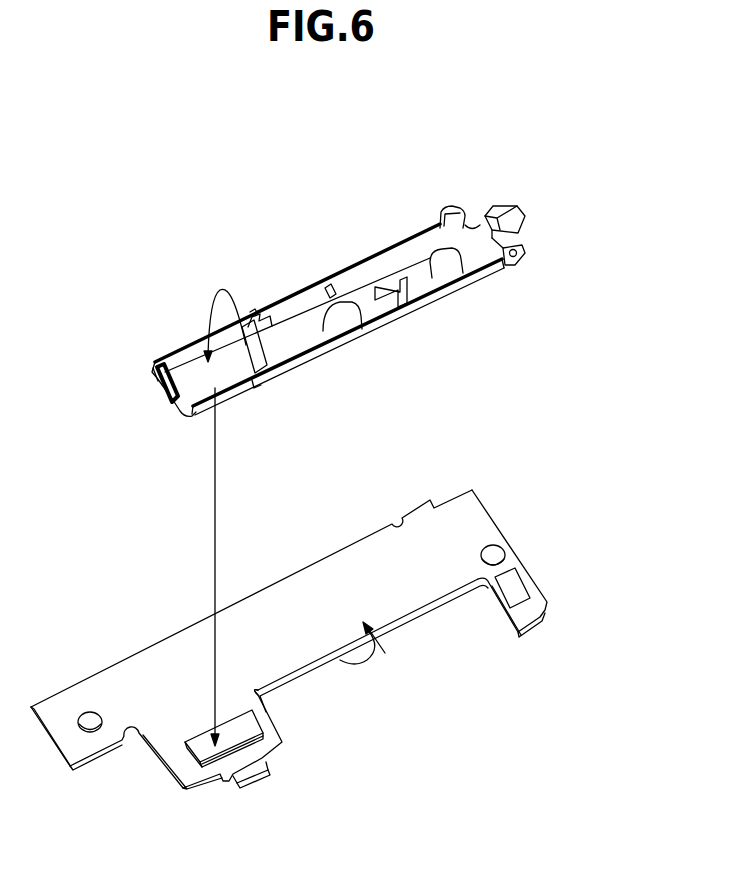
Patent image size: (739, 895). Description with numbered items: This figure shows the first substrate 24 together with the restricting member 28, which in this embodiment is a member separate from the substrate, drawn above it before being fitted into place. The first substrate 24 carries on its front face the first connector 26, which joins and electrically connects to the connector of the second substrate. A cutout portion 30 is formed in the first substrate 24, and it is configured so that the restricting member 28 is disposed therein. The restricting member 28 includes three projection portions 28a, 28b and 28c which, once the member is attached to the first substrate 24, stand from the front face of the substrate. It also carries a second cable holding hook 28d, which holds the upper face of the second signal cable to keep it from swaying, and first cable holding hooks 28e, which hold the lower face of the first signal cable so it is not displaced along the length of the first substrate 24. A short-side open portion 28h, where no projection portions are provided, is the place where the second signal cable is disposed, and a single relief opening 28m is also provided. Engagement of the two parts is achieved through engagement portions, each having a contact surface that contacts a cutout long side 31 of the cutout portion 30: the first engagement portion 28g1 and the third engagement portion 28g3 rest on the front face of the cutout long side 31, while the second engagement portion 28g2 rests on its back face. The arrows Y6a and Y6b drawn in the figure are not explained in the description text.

The restricting member 28 is at (524, 111).
The projection portion 28a is at (431, 250).
The projection portion 28b is at (262, 350).
The projection portion 28c is at (183, 393).
The second cable holding hook 28d is at (512, 212).
The first cable holding hooks 28e is at (407, 238).
The first engagement portion 28g1 is at (452, 207).
The second engagement portion 28g2 is at (328, 286).
The third engagement portion 28g3 is at (245, 326).
The short-side open portion 28h is at (503, 243).
The relief opening 28m is at (246, 345).
The first substrate 24 is at (143, 670).
The first connector 26 is at (205, 742).
The cutout portion 30 is at (274, 708).
The cutout long side 31 is at (430, 606).
The view arrow Y6a is at (215, 592).
The view arrow Y6b is at (340, 660).